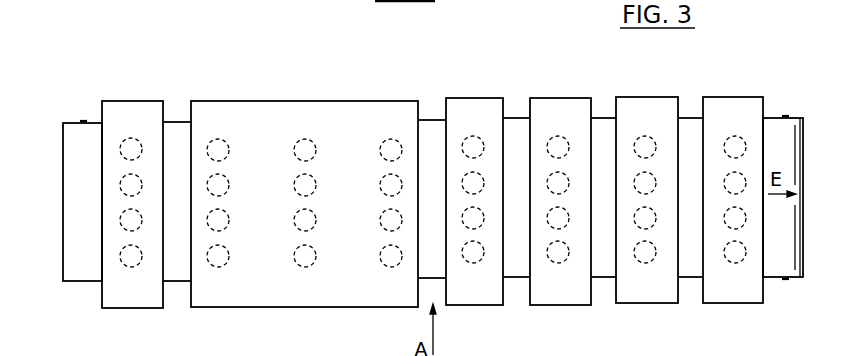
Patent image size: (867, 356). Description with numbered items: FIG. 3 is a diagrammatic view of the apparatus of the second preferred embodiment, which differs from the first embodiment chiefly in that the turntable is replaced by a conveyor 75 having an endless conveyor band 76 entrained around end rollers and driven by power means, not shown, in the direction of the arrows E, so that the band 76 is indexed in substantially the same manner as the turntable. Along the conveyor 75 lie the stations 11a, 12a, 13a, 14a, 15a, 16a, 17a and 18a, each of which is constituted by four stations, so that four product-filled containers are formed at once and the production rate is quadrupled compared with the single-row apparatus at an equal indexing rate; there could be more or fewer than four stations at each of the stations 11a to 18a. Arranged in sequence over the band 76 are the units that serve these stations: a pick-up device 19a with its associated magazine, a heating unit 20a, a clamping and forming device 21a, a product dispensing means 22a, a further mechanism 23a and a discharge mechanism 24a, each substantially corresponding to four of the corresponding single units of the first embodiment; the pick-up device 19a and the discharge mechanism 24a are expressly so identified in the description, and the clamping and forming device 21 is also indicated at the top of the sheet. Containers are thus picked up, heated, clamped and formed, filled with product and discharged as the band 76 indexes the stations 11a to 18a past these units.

The clamping and forming device 21 is at (407, 2).
The conveyor 75 is at (91, 290).
The endless conveyor band 76 is at (178, 272).
The pick-up device 19a is at (134, 101).
The second heating zone 20a is at (303, 101).
The third heating zone 21a is at (473, 98).
The fourth heating zone 22a is at (557, 98).
The fifth heating zone 23a is at (647, 97).
The discharge mechanism 24a is at (732, 97).
The station 11a is at (123, 157).
The station 12a is at (228, 192).
The station 13a is at (295, 184).
The station 14a is at (383, 193).
The station 15a is at (467, 228).
The station 16a is at (552, 228).
The station 17a is at (636, 228).
The station 18a is at (726, 228).